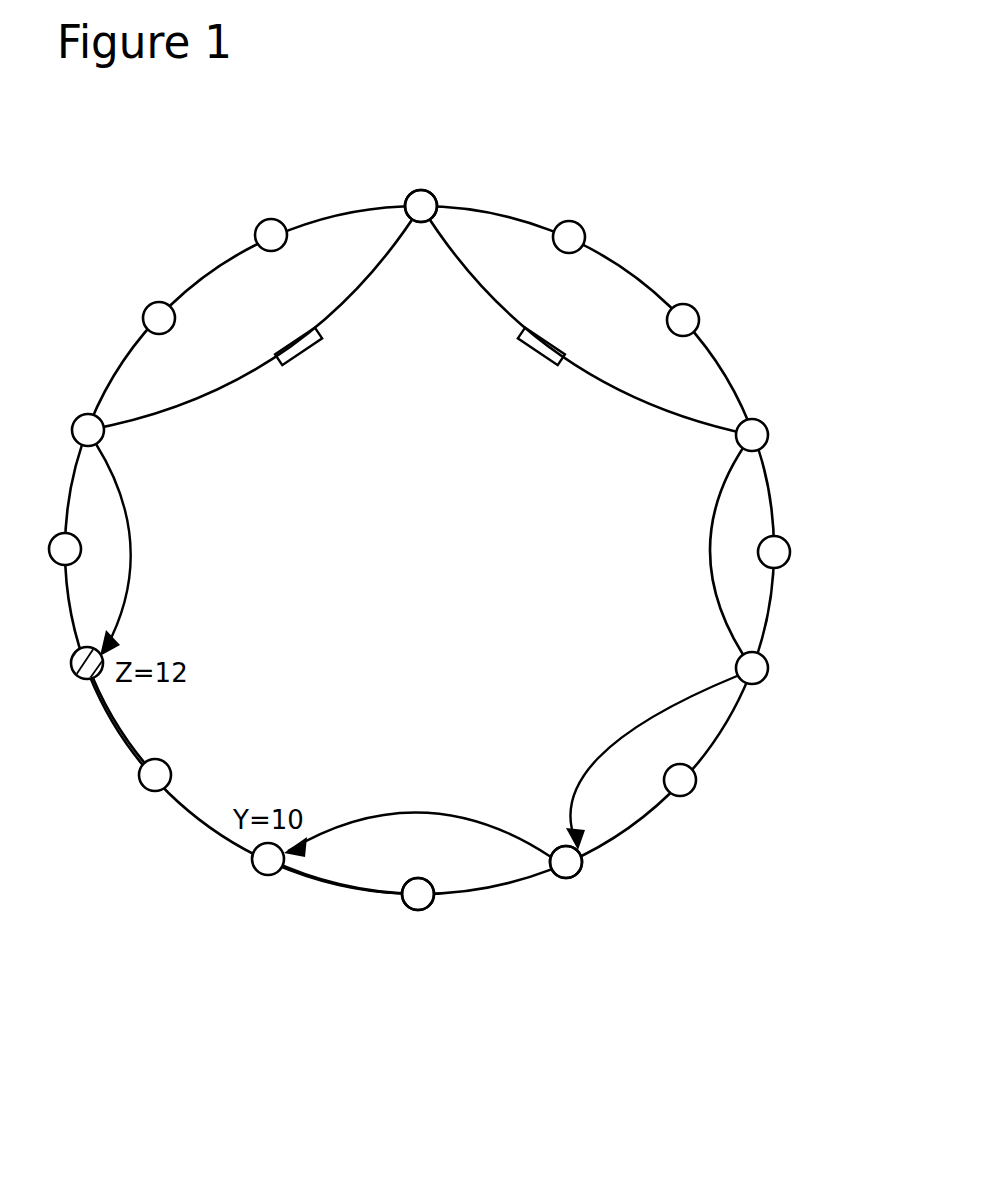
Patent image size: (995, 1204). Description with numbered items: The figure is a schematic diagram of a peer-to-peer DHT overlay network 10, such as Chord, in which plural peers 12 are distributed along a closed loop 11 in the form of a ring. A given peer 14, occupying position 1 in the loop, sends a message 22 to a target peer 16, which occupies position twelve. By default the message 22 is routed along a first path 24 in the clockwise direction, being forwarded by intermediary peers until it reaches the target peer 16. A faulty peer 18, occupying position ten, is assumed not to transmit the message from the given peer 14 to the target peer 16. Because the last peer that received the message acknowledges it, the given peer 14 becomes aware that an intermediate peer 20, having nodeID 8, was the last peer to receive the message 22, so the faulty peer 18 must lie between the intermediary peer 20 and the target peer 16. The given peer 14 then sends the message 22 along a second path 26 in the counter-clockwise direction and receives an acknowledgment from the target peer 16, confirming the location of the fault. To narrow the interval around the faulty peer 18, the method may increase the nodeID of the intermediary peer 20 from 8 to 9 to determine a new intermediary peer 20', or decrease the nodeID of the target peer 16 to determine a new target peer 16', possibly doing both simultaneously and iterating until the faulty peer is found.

The DHT overlay network 10 is at (608, 119).
The closed loop 11 is at (325, 1020).
The peers 12 is at (693, 311).
The given peer 14 is at (421, 190).
The position 1 is at (420, 238).
The target peer 16 is at (67, 682).
The new target peer 16' is at (140, 806).
The faulty peer 18 is at (261, 874).
The intermediary peer 20 is at (582, 889).
The nodeID 8 is at (546, 841).
The nodeID 9 is at (418, 876).
The new intermediary peer 20' is at (434, 927).
The message 22 is at (300, 357).
The first path 24 is at (673, 410).
The second path 26 is at (190, 397).